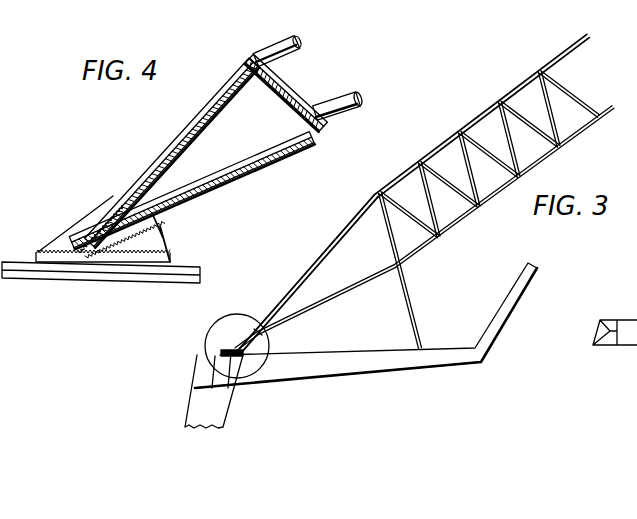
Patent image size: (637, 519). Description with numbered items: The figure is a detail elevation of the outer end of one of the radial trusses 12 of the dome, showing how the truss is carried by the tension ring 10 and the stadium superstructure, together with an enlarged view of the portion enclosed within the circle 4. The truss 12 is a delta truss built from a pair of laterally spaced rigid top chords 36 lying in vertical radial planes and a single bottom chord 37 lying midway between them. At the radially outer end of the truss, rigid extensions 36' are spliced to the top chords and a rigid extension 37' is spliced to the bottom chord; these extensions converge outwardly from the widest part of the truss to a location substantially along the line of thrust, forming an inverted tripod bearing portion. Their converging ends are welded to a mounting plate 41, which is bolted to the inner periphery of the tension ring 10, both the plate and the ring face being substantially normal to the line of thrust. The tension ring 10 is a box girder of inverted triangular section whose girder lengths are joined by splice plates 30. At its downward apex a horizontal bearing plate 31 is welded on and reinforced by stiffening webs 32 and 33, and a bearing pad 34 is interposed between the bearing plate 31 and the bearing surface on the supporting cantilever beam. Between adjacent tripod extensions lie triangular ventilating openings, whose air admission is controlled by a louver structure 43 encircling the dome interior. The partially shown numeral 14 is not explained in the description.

In FIG. 3, the circle 4 is at (205, 332).
In FIG. 3, the tension ring 10 is at (237, 334).
In FIG. 3, the radial truss 12 is at (452, 242).
In FIG. 4, the partial reference 14 is at (171, 6).
In FIG. 3, the splice plate 30 is at (633, 363).
In FIG. 4, the bearing plate 31 is at (40, 250).
In FIG. 4, the stiffening web 32 is at (78, 230).
In FIG. 4, the stiffening web 33 is at (153, 238).
In FIG. 4, the bearing pad 34 is at (194, 266).
In FIG. 3, the top chord 36 is at (482, 116).
In FIG. 3, the top chord extension 36' is at (309, 273).
In FIG. 4, the top chord extension 36' is at (194, 136).
In FIG. 3, the bottom chord 37 is at (504, 197).
In FIG. 3, the bottom chord extension 37' is at (315, 308).
In FIG. 4, the bottom chord extension 37' is at (216, 156).
In FIG. 4, the mounting plate 41 is at (276, 85).
In FIG. 3, the louver structure 43 is at (415, 303).